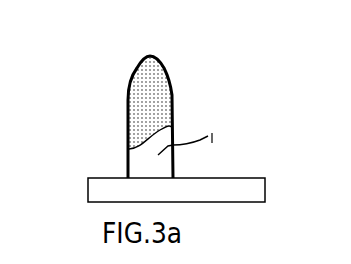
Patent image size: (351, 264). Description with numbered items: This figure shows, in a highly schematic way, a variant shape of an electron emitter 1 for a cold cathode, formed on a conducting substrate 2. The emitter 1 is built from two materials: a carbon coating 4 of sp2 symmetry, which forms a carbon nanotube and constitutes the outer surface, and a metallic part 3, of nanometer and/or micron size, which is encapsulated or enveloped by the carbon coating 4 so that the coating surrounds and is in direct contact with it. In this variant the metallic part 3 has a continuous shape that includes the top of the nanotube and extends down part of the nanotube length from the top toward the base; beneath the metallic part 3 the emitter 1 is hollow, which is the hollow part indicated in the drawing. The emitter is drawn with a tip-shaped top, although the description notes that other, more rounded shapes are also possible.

The emitter 1 is at (171, 94).
The conducting substrate 2 is at (97, 193).
The metallic part 3 is at (153, 105).
The carbon coating 4 is at (128, 135).